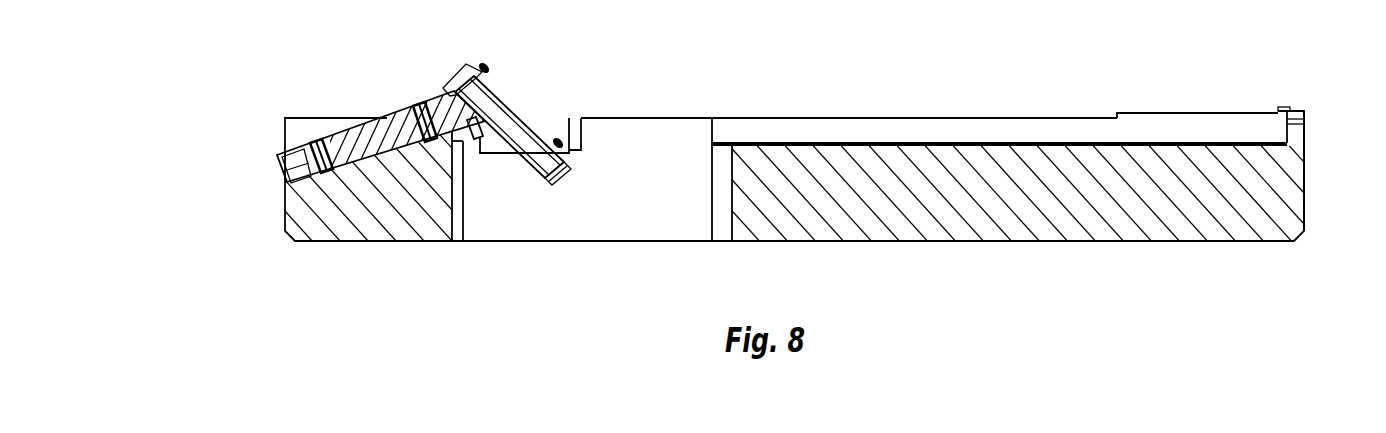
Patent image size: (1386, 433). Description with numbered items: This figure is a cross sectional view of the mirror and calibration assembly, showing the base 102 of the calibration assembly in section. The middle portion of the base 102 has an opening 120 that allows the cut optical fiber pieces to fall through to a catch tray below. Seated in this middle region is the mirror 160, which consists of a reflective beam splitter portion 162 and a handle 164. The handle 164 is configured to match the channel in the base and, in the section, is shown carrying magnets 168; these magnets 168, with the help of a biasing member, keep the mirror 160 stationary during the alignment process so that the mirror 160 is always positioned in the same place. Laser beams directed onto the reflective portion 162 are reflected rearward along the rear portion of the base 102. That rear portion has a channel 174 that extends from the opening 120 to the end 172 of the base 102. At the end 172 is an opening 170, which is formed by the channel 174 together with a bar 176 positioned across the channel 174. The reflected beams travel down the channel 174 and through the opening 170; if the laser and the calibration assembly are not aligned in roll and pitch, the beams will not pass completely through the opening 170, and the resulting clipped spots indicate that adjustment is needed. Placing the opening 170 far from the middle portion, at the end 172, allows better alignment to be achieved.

The base 102 is at (1255, 244).
The opening 120 is at (655, 138).
The mirror 160 is at (397, 106).
The reflective (beam splitter) portion 162 is at (497, 80).
The handle 164 is at (350, 138).
The magnets 168 is at (322, 178).
The opening 170 is at (1307, 113).
The end 172 is at (1307, 152).
The channel 174 is at (1002, 133).
The bar 176 is at (1295, 106).